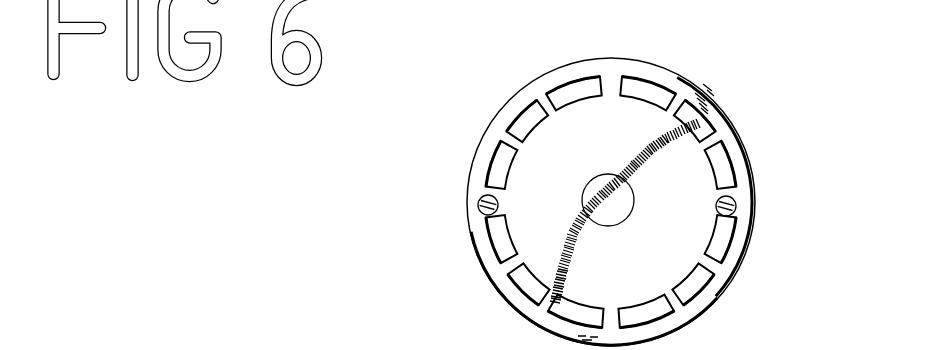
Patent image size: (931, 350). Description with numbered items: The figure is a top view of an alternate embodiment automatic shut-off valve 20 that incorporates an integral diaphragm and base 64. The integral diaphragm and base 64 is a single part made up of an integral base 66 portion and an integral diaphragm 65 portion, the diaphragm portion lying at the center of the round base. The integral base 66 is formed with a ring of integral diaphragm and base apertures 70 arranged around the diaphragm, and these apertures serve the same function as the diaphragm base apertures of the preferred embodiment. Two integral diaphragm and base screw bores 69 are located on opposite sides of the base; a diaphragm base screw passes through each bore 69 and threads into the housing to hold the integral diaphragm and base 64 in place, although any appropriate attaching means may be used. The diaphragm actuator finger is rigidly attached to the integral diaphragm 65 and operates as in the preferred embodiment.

The automatic shut-off valve 20 is at (737, 63).
The integral diaphragm and base 64 is at (708, 105).
The integral diaphragm 65 is at (560, 232).
The integral base 66 is at (476, 217).
The integral diaphragm and base screw bore 69 is at (482, 197).
The integral diaphragm and base apertures 70 is at (730, 162).